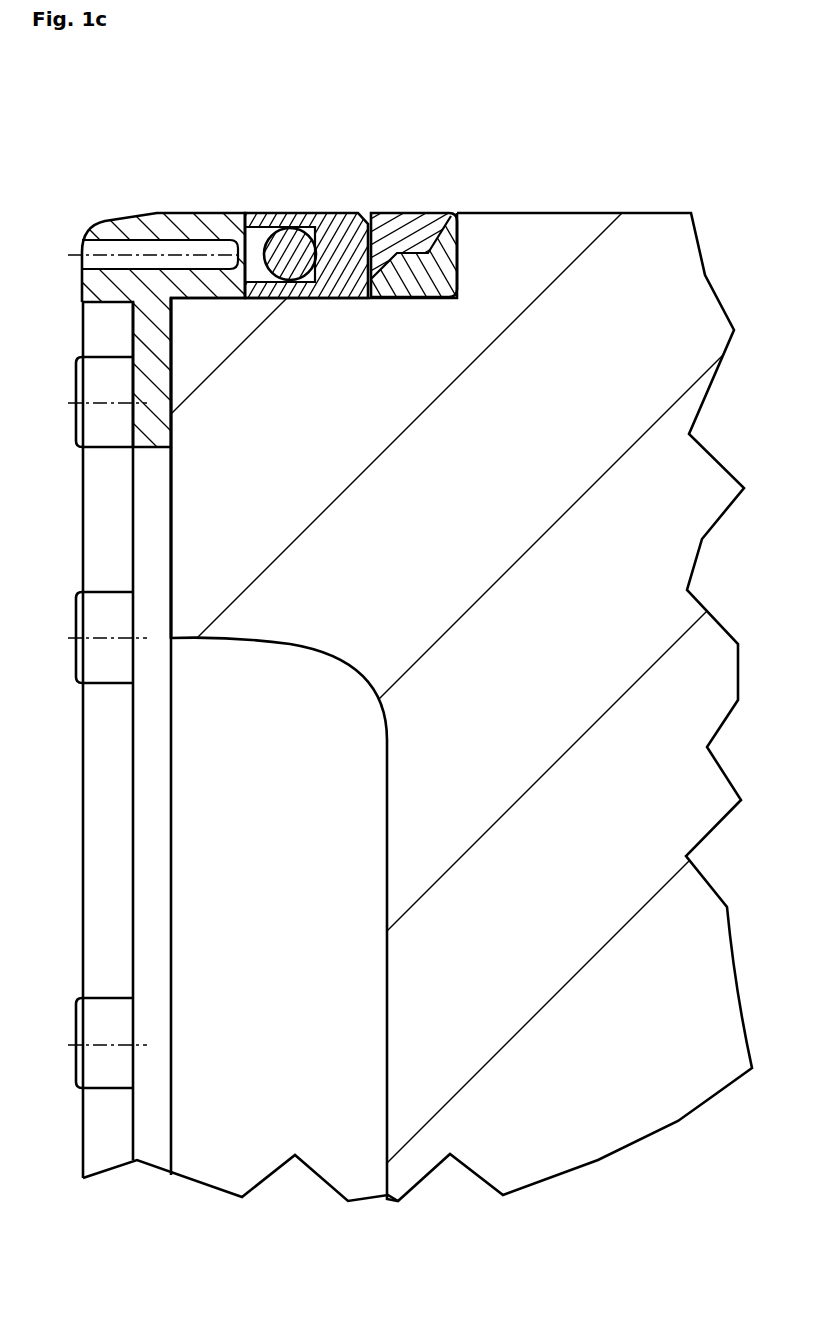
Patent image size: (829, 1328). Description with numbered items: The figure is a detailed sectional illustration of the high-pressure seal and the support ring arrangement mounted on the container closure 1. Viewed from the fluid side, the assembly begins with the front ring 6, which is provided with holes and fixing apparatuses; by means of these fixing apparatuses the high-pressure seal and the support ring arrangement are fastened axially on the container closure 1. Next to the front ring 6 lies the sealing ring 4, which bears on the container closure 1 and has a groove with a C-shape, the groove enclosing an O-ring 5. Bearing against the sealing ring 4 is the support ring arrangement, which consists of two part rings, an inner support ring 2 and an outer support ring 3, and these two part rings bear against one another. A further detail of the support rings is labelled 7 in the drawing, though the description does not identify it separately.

The container closure 1 is at (587, 358).
The inner support ring 2 is at (438, 277).
The outer support ring 3 is at (465, 198).
The sealing ring 4 is at (348, 233).
The O-ring 5 is at (290, 247).
The front ring 6 is at (173, 225).
The sealing lip 7 is at (394, 230).